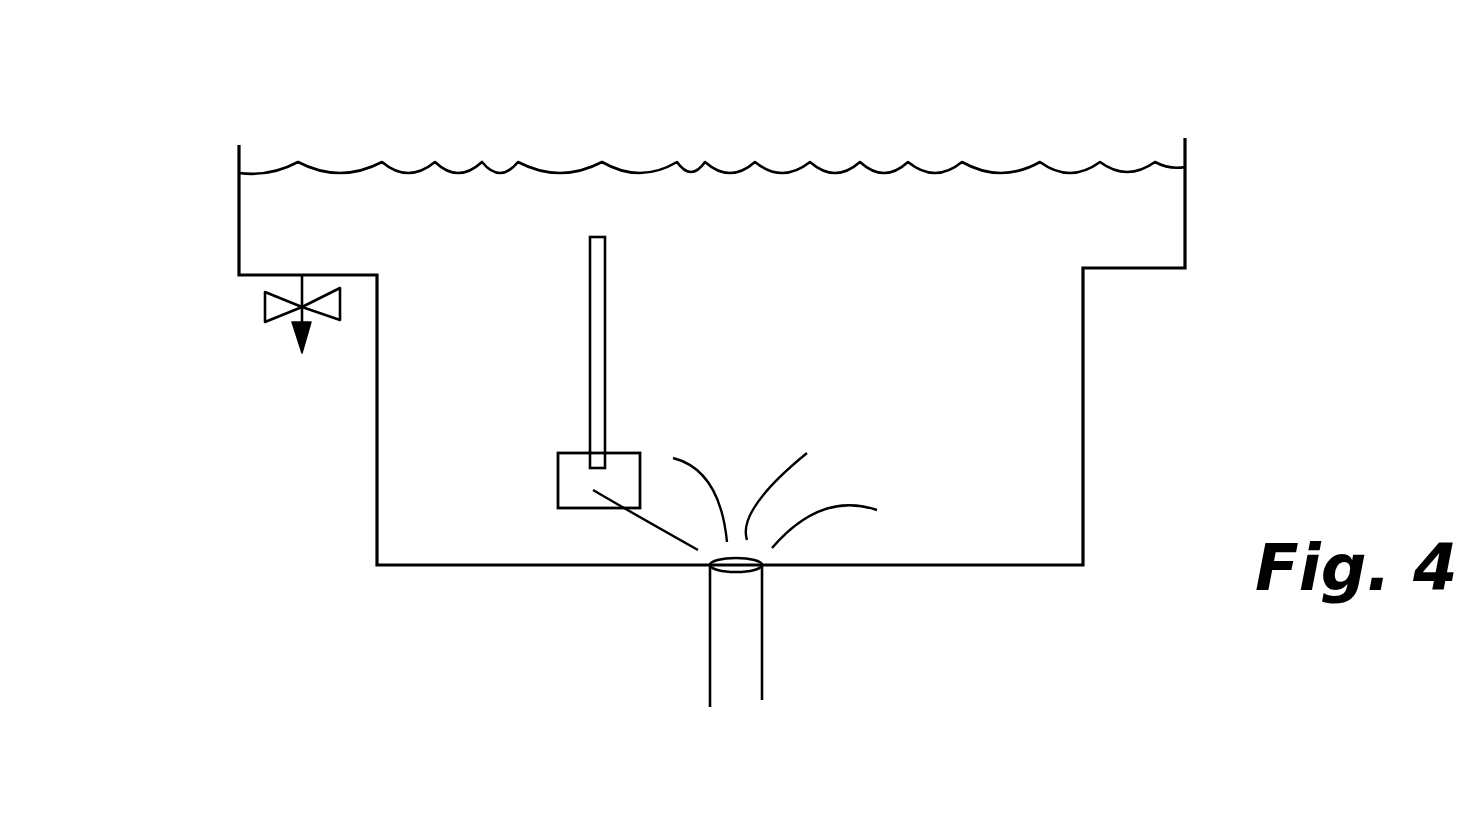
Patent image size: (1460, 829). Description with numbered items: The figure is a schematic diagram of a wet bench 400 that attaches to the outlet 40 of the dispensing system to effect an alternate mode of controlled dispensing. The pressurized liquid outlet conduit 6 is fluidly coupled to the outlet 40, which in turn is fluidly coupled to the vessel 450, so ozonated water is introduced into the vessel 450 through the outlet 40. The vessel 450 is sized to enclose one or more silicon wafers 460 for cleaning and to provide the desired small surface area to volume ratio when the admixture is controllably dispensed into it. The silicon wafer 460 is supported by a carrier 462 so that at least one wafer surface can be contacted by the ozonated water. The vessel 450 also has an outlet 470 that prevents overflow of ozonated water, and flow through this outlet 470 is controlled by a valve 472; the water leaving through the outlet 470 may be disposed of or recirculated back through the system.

The wet bench 400 is at (1060, 95).
The vessel 450 is at (1185, 223).
The silicon wafer 460 is at (590, 372).
The carrier 462 is at (577, 488).
The outlet 470 is at (297, 338).
The valve 472 is at (264, 301).
The outlet 40 is at (763, 567).
The pressurized liquid outlet conduit 6 is at (745, 660).